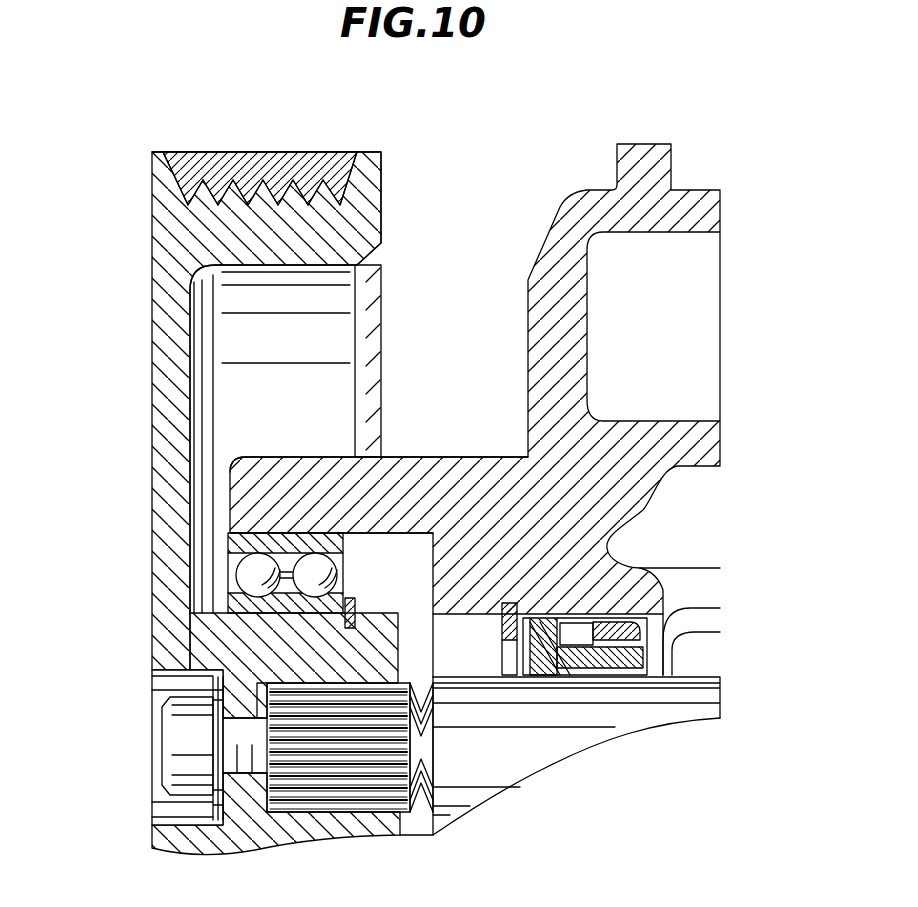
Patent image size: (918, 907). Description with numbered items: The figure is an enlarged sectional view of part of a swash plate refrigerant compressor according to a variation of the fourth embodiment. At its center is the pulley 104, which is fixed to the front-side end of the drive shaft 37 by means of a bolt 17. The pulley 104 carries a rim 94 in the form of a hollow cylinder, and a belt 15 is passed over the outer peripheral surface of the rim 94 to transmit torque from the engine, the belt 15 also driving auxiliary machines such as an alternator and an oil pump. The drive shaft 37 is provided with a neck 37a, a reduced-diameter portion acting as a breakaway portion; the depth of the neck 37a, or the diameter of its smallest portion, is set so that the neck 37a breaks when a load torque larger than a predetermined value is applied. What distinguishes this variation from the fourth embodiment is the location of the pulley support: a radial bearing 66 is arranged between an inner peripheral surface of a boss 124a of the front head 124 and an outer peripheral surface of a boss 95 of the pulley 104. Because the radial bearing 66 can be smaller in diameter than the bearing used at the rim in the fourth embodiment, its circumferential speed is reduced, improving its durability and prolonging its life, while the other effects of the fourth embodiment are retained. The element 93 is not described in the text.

The pulley 104 is at (143, 157).
The belt 15 is at (256, 152).
The hub housing 93 is at (162, 410).
The rim 94 is at (372, 197).
The front head 124 is at (703, 193).
The boss 124a is at (287, 465).
The radial bearing 66 is at (247, 580).
The boss 95 is at (382, 645).
The bolt 17 is at (177, 740).
The drive shaft 37 is at (540, 723).
The neck 37a is at (435, 803).